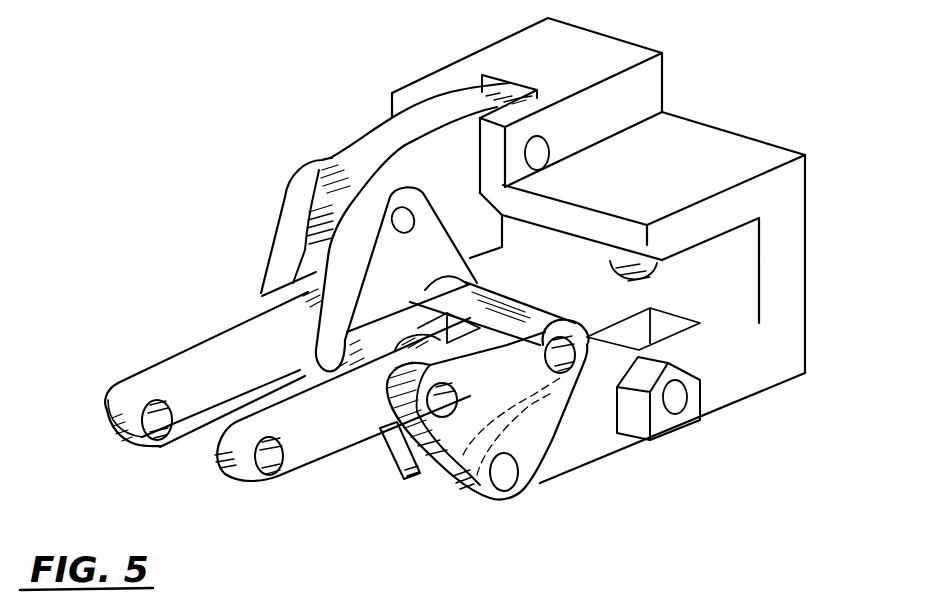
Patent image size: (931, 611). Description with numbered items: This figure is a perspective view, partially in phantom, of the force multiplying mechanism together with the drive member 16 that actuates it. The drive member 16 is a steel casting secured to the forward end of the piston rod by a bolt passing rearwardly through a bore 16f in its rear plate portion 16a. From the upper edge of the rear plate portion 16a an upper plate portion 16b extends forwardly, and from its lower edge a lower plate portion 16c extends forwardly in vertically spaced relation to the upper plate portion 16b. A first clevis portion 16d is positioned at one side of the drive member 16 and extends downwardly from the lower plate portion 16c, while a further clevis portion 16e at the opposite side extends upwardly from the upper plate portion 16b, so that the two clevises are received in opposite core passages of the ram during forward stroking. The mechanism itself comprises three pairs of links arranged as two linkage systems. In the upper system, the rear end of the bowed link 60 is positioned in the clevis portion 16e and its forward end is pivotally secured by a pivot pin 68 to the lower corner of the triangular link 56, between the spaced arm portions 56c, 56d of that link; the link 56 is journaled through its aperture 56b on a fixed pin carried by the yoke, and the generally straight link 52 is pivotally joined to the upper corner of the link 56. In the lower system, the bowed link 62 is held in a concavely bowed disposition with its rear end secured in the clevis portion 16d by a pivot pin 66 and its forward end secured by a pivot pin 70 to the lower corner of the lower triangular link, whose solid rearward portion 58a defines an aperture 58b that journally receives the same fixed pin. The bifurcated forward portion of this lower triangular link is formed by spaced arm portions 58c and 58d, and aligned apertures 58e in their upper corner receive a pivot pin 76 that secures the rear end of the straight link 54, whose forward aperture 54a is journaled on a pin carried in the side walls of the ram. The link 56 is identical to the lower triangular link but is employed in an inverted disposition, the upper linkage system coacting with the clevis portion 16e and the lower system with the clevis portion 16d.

The drive member 16 is at (742, 110).
The rear plate portion 16a is at (807, 180).
The upper plate portion 16b is at (685, 183).
The lower plate portion 16c is at (545, 283).
The first clevis portion 16d is at (610, 426).
The further clevis portion 16e is at (400, 80).
The bore 16f is at (614, 246).
The link 52 is at (203, 350).
The link 54 is at (338, 425).
The forward aperture 54a is at (275, 458).
The link 56 is at (296, 247).
The aperture 56b is at (438, 290).
The arm portion 56c is at (297, 215).
The arm portion 56d is at (345, 265).
The solid rearward portion 58a is at (577, 286).
The aperture 58b is at (553, 373).
The arm portion 58c is at (393, 458).
The arm portion 58d is at (452, 490).
The aligned apertures 58e is at (400, 467).
The link 60 is at (368, 152).
The link 62 is at (565, 460).
The pivot pin 66 is at (683, 403).
The pivot pin 68 is at (418, 228).
The pivot pin 70 is at (505, 480).
The pivot pin 76 is at (448, 397).